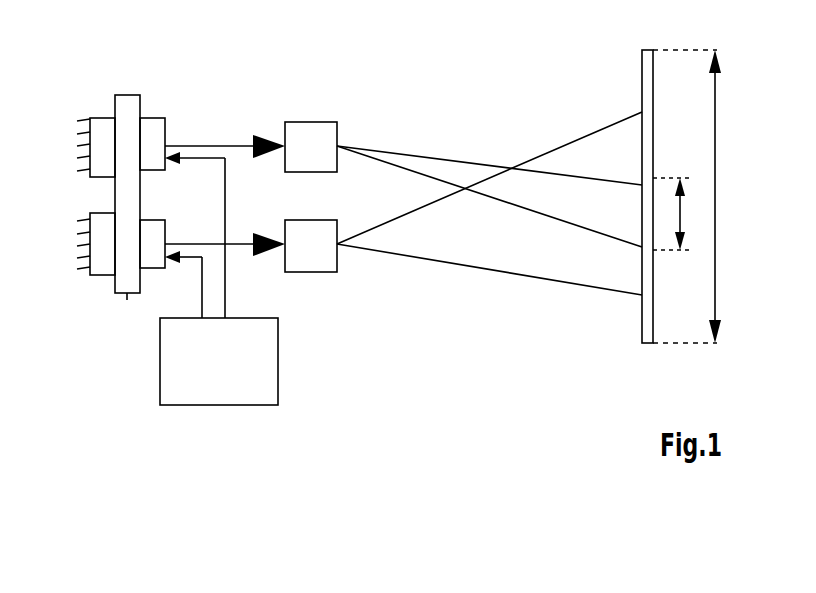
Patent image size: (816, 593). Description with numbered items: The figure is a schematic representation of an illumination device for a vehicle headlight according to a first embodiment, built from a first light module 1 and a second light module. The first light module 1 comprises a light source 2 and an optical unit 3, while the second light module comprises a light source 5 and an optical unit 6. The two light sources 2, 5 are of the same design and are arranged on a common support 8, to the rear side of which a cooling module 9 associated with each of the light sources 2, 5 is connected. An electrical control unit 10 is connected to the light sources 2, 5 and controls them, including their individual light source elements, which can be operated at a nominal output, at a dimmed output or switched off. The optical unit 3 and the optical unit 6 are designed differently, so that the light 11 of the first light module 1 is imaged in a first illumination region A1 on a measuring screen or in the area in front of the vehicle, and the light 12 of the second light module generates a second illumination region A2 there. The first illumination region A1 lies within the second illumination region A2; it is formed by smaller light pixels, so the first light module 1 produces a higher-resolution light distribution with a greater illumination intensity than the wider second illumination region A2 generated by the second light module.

The first light module 1 is at (388, 79).
The light source 2 is at (158, 128).
The optical unit 3 is at (302, 161).
The light source 5 is at (152, 233).
The optical unit 6 is at (302, 259).
The common support 8 is at (127, 300).
The cooling module 9 is at (102, 128).
The electrical control unit 10 is at (200, 378).
The light 11 is at (214, 145).
The light 12 is at (240, 243).
The first illumination region A1 is at (680, 214).
The second illumination region A2 is at (715, 105).